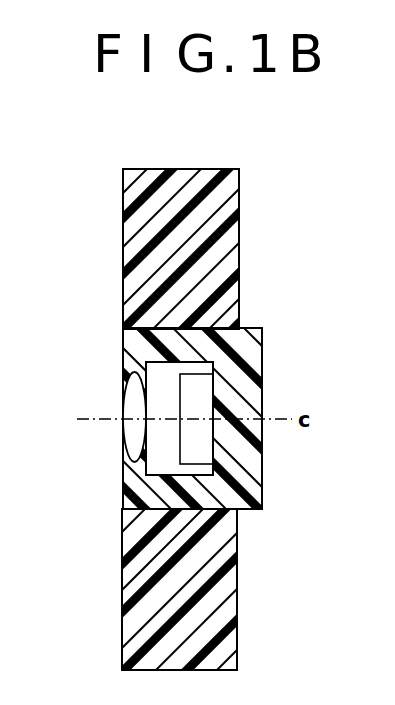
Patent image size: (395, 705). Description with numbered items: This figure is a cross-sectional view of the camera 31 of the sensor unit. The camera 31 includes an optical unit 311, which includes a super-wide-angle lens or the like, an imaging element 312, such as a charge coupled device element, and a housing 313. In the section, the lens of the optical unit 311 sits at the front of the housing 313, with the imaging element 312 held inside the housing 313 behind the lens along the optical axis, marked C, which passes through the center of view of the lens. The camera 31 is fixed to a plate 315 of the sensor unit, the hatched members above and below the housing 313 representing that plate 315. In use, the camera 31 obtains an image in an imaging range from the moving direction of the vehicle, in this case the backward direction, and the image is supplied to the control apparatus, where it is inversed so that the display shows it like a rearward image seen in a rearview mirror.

The camera 31 is at (197, 394).
The optical unit 311 is at (135, 416).
The imaging element 312 is at (203, 395).
The housing 313 is at (249, 331).
The plate 315 is at (226, 256).